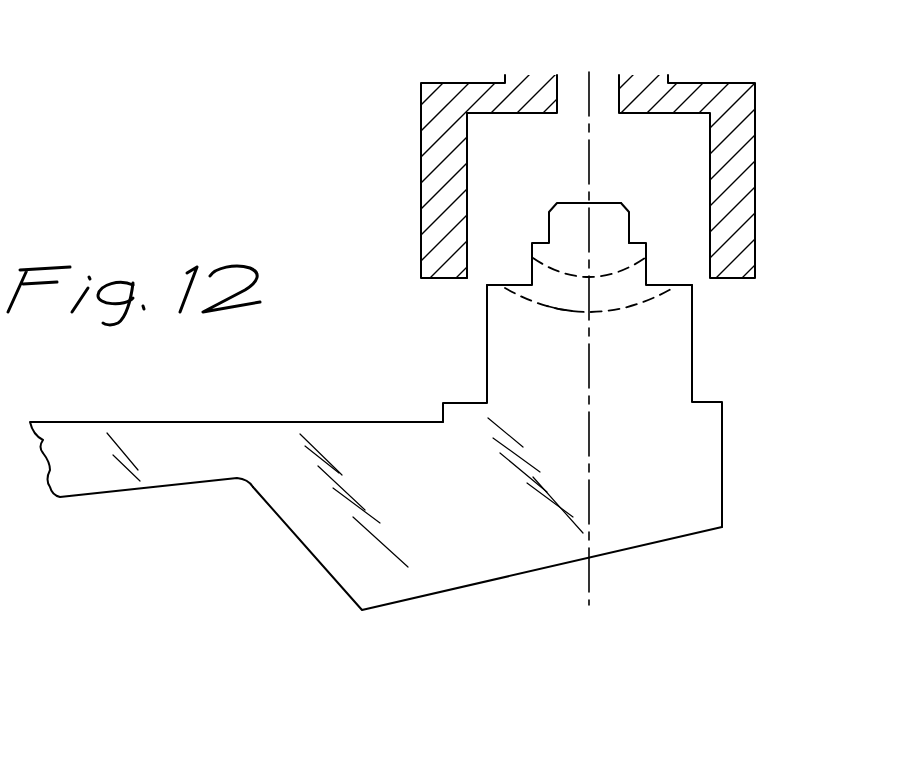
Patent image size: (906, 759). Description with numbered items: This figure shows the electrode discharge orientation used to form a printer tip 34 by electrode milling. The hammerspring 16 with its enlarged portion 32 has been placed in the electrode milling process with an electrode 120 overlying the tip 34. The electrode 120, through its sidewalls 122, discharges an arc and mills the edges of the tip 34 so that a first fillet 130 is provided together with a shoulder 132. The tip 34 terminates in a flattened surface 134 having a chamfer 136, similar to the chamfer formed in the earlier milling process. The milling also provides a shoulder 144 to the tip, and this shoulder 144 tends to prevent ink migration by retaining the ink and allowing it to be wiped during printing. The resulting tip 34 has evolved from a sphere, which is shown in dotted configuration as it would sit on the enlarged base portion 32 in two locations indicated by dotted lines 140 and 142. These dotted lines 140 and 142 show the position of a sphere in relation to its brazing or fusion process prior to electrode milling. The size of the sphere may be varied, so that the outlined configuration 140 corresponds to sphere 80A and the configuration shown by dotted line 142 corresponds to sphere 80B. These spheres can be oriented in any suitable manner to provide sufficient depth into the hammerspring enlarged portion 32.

The hammerspring 16 is at (195, 460).
The enlarged portion 32 is at (472, 562).
The printer tip 34 is at (462, 342).
The sphere 80A is at (615, 273).
The sphere 80B is at (617, 313).
The electrode 120 is at (420, 167).
The sidewalls 122 is at (467, 185).
The first fillet 130 is at (647, 281).
The shoulder 132 is at (632, 242).
The flattened surface 134 is at (595, 197).
The chamfer 136 is at (627, 205).
The dotted line 140 is at (560, 268).
The dotted line 142 is at (556, 313).
The shoulder 144 is at (530, 287).